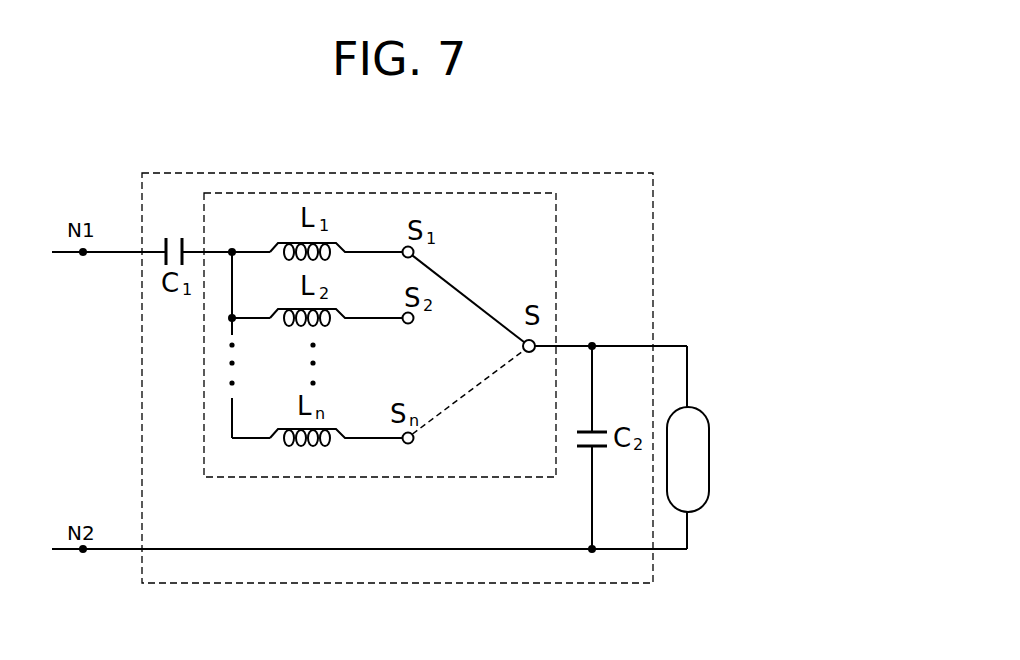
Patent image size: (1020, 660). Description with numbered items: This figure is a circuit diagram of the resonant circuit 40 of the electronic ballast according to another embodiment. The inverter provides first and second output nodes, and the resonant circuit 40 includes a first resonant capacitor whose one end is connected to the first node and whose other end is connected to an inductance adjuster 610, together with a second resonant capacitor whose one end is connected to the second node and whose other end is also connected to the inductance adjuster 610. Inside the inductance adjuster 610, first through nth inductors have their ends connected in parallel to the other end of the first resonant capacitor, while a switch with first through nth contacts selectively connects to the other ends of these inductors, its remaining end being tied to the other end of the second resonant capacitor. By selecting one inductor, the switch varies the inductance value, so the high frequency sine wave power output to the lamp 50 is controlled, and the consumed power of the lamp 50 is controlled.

The resonant circuit 40 is at (598, 172).
The inductance adjuster 610 is at (462, 192).
The lamp 50 is at (703, 412).